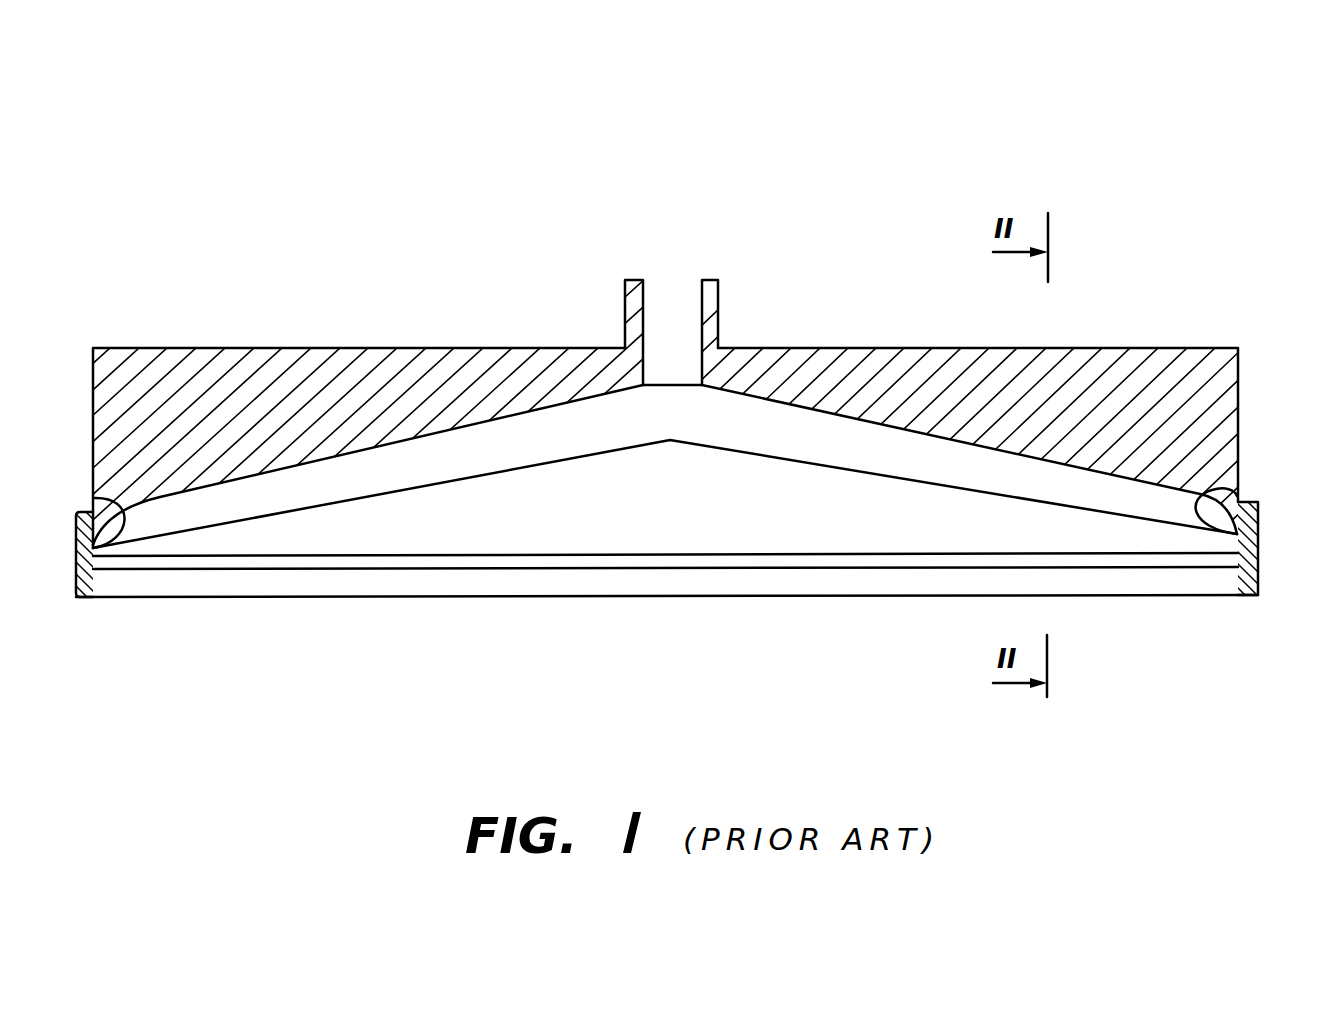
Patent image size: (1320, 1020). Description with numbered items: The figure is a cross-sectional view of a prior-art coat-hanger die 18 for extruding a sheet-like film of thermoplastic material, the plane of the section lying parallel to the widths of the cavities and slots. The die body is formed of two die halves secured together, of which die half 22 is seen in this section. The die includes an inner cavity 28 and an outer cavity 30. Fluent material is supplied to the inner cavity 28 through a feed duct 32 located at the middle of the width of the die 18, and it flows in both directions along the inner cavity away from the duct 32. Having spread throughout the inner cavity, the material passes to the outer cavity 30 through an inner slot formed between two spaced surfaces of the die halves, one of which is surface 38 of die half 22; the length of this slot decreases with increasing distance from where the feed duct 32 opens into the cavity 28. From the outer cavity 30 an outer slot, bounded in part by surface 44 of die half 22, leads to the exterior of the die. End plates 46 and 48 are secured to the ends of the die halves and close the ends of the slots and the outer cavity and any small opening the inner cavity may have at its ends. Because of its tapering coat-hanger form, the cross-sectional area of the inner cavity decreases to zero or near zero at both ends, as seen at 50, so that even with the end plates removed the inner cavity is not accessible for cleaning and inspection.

The die 18 is at (404, 212).
The die half 22 is at (858, 348).
The inner cavity 28 is at (824, 442).
The outer cavity 30 is at (880, 560).
The feed duct 32 is at (679, 297).
The surface of die half 38 is at (747, 533).
The surface of die half 44 is at (967, 583).
The end plate 46 is at (76, 540).
The end plate 48 is at (1258, 552).
The inner cavity ends 50 is at (93, 500).